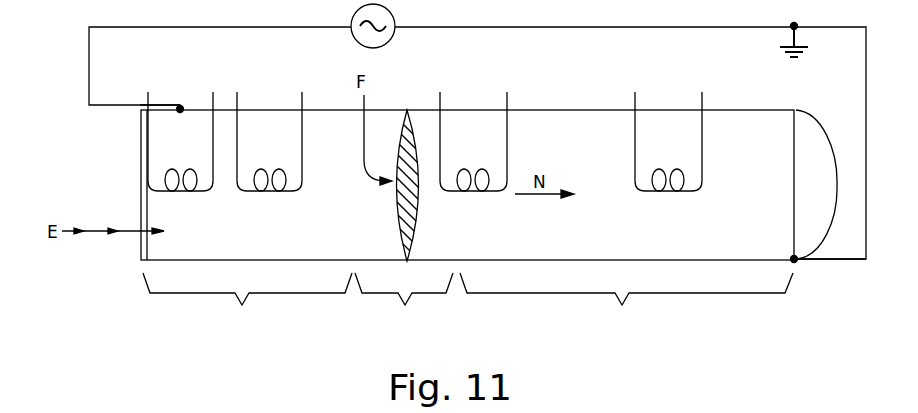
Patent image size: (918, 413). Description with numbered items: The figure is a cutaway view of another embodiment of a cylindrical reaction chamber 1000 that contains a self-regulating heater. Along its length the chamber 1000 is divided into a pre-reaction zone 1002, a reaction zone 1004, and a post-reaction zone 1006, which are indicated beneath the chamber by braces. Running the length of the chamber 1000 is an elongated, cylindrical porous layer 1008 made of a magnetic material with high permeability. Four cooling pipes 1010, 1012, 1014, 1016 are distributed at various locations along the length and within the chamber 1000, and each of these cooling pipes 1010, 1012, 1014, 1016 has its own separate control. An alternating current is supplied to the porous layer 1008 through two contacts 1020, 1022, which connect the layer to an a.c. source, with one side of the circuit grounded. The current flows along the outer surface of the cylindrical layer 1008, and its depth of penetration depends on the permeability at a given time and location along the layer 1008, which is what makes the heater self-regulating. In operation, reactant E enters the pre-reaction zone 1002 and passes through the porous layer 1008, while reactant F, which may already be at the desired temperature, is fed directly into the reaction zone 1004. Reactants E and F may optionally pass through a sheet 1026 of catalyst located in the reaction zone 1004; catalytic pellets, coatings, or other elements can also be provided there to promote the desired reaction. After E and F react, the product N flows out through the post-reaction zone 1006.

The cylindrical reaction chamber 1000 is at (100, 288).
The pre-reaction zone 1002 is at (247, 311).
The reaction zone 1004 is at (407, 311).
The post-reaction zone 1006 is at (626, 311).
The porous layer 1008 is at (755, 150).
The cooling pipe 1010 is at (213, 100).
The cooling pipe 1012 is at (302, 100).
The cooling pipe 1014 is at (440, 101).
The cooling pipe 1016 is at (702, 100).
The contact 1020 is at (796, 261).
The contact 1022 is at (179, 108).
The sheet of catalyst 1026 is at (407, 110).